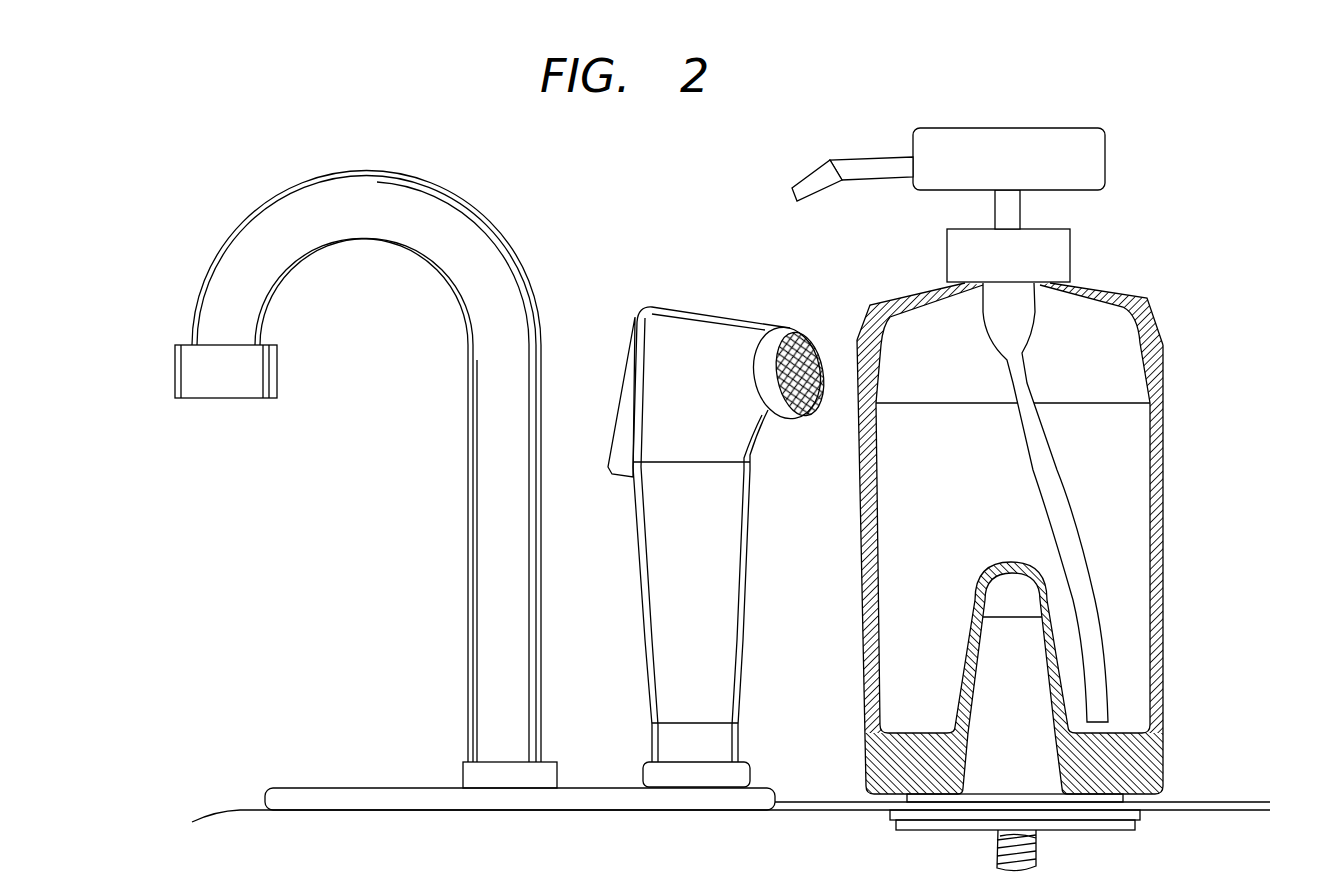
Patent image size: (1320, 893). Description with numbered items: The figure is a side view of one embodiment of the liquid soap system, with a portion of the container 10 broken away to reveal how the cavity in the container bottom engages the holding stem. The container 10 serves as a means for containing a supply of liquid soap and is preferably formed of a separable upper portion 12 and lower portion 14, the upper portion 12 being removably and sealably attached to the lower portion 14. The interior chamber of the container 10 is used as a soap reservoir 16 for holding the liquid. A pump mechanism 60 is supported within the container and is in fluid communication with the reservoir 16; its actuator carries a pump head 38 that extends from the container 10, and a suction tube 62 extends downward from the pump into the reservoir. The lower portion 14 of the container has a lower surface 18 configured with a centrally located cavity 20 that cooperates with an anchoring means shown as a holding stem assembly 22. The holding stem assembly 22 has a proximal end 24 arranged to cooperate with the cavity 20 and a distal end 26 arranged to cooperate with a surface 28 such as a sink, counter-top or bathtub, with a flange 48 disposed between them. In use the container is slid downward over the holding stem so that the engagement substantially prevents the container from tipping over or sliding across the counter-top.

The container 10 is at (1176, 402).
The upper portion 12 is at (1150, 313).
The lower portion 14 is at (1163, 463).
The soap reservoir 16 is at (1120, 515).
The lower surface 18 is at (1167, 793).
The cavity 20 is at (982, 573).
The holding stem assembly 22 is at (998, 730).
The proximal end 24 is at (998, 675).
The distal end 26 is at (1035, 847).
The surface 28 is at (1233, 802).
The pump head 38 is at (1099, 127).
The flange 48 is at (907, 797).
The pump mechanism 60 is at (984, 214).
The suction tube 62 is at (1100, 627).